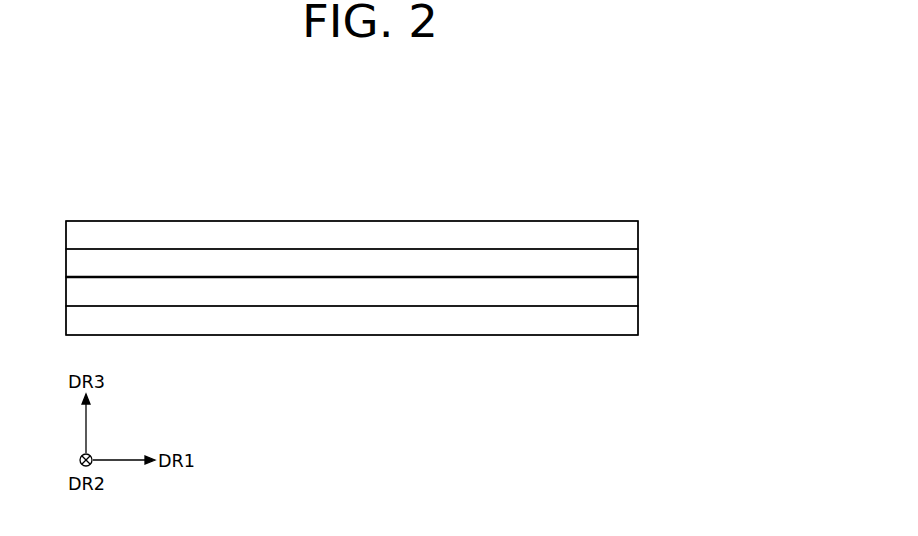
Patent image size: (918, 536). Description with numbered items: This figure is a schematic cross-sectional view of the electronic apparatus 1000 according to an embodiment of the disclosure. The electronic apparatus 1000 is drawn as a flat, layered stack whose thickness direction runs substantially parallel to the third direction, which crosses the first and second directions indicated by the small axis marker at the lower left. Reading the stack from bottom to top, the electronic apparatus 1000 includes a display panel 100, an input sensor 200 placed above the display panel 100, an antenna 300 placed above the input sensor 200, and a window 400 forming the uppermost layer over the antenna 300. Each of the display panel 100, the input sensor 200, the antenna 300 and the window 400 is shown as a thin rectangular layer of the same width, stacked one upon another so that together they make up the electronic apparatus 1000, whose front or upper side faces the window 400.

The electronic apparatus 1000 is at (392, 214).
The window 400 is at (628, 238).
The antenna 300 is at (628, 266).
The input sensor 200 is at (628, 294).
The display panel 100 is at (628, 322).